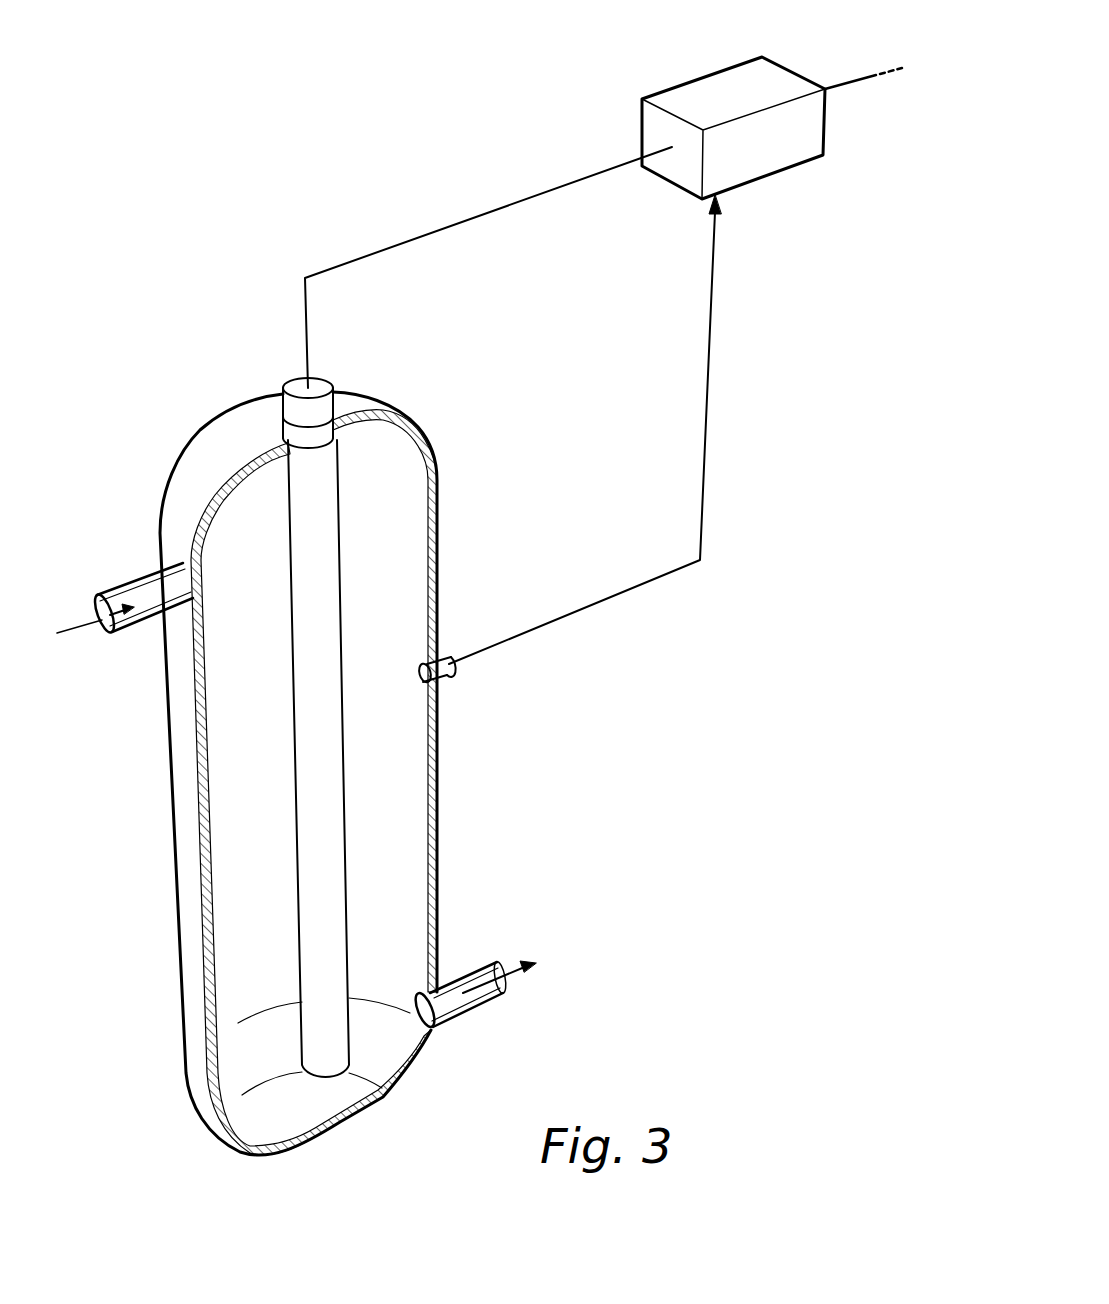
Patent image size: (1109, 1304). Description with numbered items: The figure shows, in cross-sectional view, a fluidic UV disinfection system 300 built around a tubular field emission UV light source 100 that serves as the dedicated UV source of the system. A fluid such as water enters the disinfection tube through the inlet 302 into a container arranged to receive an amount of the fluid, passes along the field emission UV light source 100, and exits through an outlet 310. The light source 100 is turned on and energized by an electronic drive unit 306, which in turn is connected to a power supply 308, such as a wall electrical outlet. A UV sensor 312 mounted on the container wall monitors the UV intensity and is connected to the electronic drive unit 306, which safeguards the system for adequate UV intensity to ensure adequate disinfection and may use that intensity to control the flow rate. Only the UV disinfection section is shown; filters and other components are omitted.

The fluidic UV disinfection system 300 is at (196, 240).
The field emission UV light source 100 is at (328, 870).
The inlet 302 is at (80, 625).
The electronic drive unit 306 is at (728, 95).
The power supply 308 is at (853, 88).
The outlet 310 is at (490, 987).
The UV sensor 312 is at (443, 673).